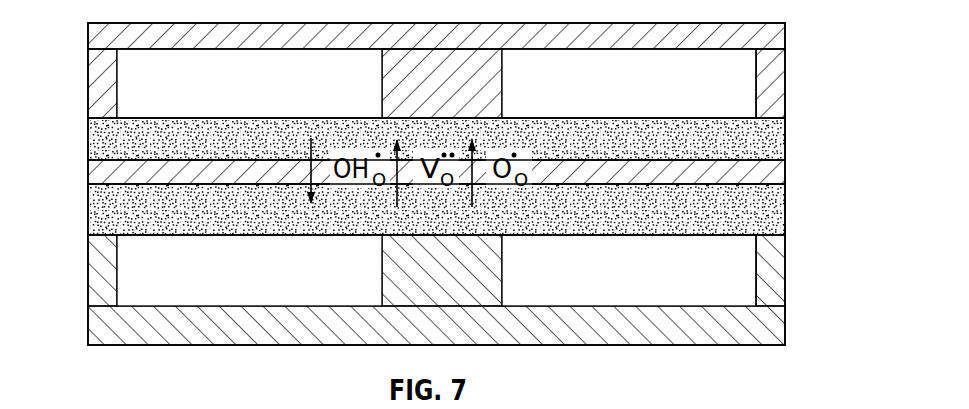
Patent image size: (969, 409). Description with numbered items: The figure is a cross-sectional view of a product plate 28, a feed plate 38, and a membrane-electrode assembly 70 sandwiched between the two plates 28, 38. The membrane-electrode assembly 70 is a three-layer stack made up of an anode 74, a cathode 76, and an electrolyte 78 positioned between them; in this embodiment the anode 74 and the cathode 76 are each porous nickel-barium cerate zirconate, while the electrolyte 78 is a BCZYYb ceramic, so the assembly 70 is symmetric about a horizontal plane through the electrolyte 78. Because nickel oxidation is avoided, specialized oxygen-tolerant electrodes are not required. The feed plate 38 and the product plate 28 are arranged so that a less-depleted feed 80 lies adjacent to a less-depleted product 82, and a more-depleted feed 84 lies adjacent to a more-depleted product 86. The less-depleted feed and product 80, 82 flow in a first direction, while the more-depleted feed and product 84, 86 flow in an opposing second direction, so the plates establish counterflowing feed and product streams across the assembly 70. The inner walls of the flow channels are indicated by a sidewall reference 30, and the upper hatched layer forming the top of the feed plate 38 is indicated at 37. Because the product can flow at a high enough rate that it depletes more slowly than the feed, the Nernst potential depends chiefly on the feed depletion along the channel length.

The product plate 28 is at (773, 311).
The sidewall 30 is at (758, 100).
The first substrate 37 is at (786, 35).
The feed plate 38 is at (780, 77).
The membrane-electrode assembly 70 is at (440, 178).
The anode 74 is at (100, 143).
The cathode 76 is at (100, 212).
The electrolyte 78 is at (93, 172).
The less-depleted feed 80 is at (613, 97).
The less-depleted product 82 is at (613, 284).
The more-depleted feed 84 is at (234, 97).
The more-depleted product 86 is at (234, 284).